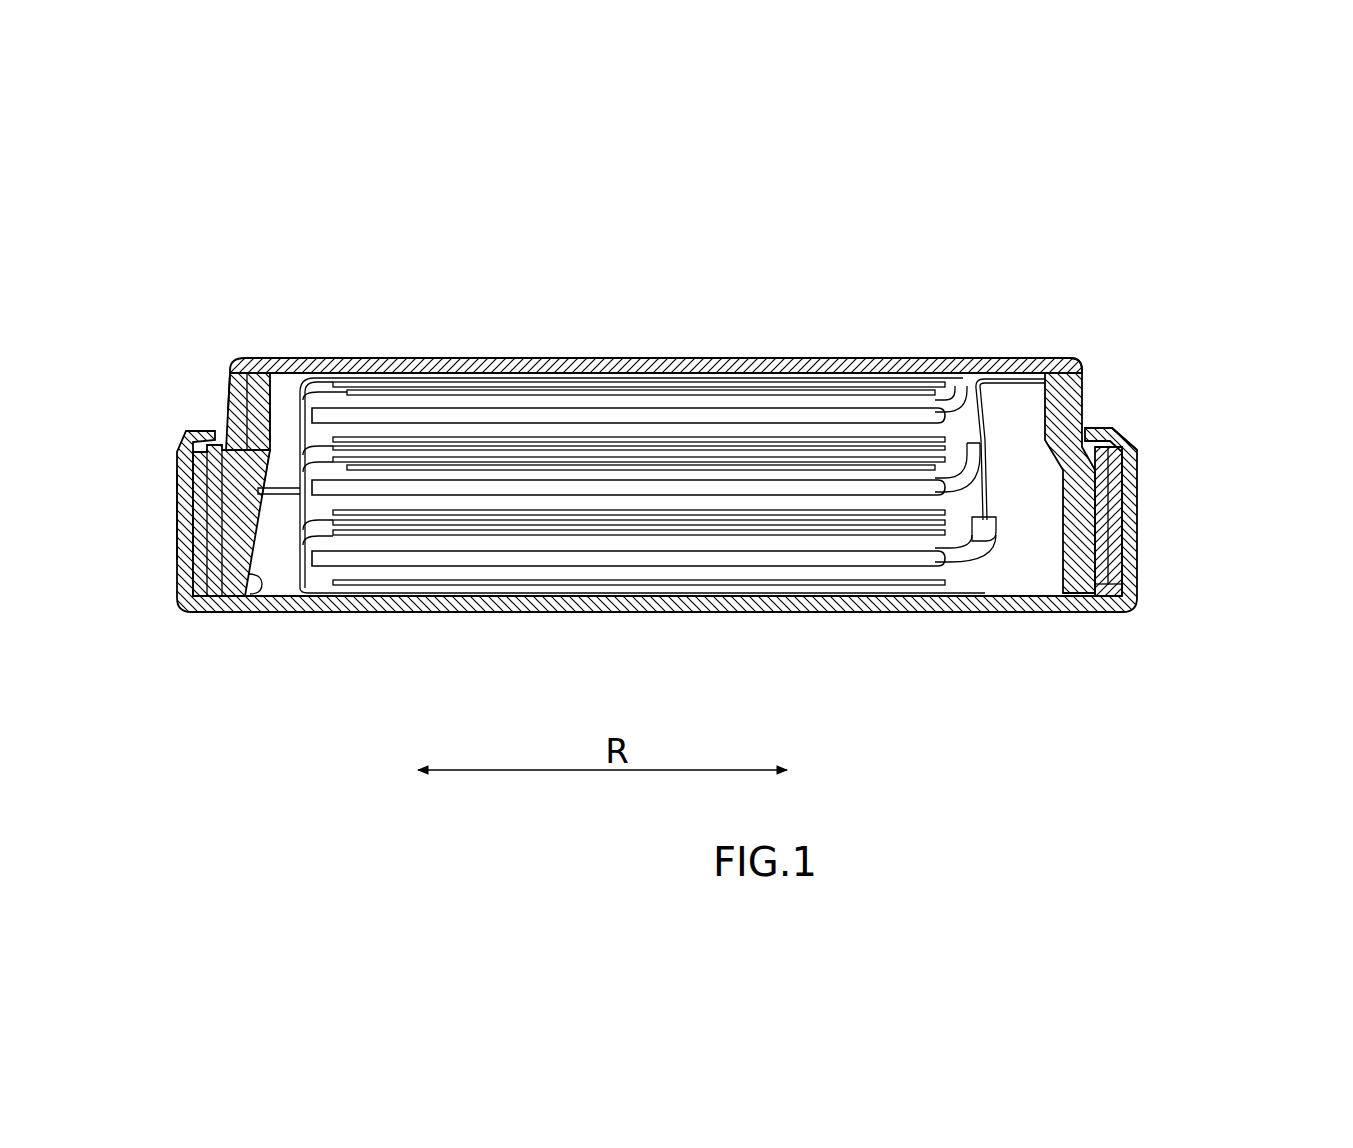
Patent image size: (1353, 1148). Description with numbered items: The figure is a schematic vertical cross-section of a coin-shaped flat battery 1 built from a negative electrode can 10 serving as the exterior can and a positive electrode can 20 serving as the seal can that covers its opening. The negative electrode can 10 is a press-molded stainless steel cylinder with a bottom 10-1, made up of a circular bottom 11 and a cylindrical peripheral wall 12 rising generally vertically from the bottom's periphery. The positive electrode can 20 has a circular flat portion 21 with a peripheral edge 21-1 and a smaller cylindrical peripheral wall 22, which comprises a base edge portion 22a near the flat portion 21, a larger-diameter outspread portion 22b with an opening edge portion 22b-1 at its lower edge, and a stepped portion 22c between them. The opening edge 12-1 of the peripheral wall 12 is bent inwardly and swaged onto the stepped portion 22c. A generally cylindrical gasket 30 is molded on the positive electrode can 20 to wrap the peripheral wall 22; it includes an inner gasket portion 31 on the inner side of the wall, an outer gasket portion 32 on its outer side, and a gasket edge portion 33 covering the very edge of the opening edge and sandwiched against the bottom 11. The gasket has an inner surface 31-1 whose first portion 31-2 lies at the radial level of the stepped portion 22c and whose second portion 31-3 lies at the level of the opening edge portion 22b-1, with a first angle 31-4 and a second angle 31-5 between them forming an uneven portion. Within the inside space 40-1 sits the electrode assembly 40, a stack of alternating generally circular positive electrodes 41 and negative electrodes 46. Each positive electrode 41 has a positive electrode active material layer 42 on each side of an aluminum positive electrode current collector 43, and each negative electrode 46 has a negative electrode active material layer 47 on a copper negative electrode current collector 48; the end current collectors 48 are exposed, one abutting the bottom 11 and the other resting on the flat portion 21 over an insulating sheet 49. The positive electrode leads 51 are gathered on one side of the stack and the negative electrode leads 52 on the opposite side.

The flat battery 1 is at (1035, 312).
The negative electrode can 10 is at (684, 613).
The cylinder with a bottom 10-1 is at (805, 612).
The bottom 11 is at (578, 612).
The peripheral wall 12 is at (187, 508).
The opening edge 12-1 is at (1113, 428).
The positive electrode can 20 is at (721, 320).
The flat portion 21 is at (805, 358).
The peripheral edge 21-1 is at (1071, 358).
The peripheral wall 22 is at (226, 398).
The base edge portion 22a is at (230, 377).
The outspread portion 22b is at (195, 494).
The opening edge portion 22b-1 is at (185, 607).
The stepped portion 22c is at (213, 427).
The gasket 30 is at (1134, 455).
The inner gasket portion 31 is at (1134, 522).
The inner surface 31-1 is at (274, 398).
The first portion 31-2 is at (270, 455).
The second portion 31-3 is at (295, 585).
The first angle 31-4 is at (1047, 463).
The second angle 31-5 is at (1101, 607).
The outer gasket portion 32 is at (1134, 484).
The gasket edge portion 33 is at (1131, 591).
The electrode assembly 40 is at (655, 503).
The inside space 40-1 is at (978, 578).
The positive electrode 41 is at (639, 414).
The positive electrode active material layer 42 is at (603, 425).
The positive electrode current collector 43 is at (650, 413).
The negative electrode 46 is at (628, 553).
The negative electrode active material layer 47 is at (500, 530).
The negative electrode current collector 48 is at (448, 528).
The insulating sheet 49 is at (378, 378).
The positive electrode lead 51 is at (985, 445).
The negative electrode lead 52 is at (260, 590).